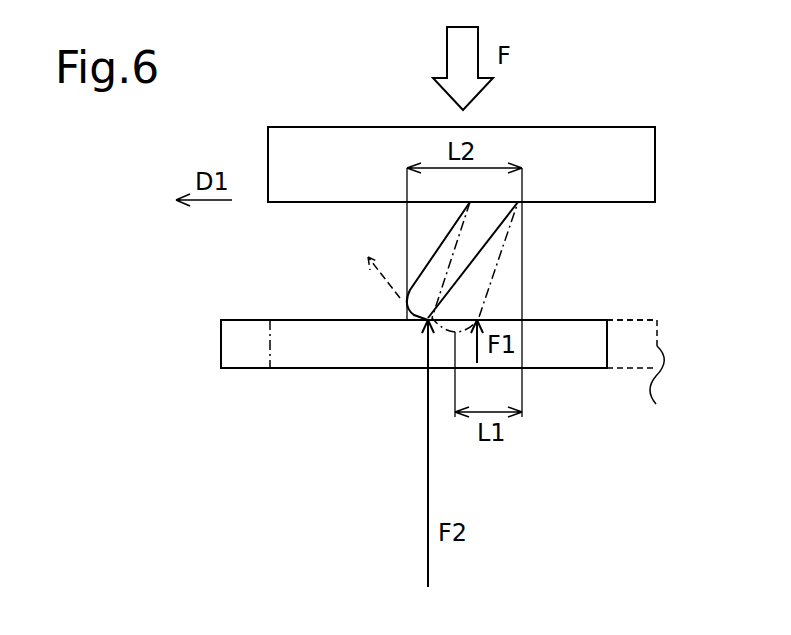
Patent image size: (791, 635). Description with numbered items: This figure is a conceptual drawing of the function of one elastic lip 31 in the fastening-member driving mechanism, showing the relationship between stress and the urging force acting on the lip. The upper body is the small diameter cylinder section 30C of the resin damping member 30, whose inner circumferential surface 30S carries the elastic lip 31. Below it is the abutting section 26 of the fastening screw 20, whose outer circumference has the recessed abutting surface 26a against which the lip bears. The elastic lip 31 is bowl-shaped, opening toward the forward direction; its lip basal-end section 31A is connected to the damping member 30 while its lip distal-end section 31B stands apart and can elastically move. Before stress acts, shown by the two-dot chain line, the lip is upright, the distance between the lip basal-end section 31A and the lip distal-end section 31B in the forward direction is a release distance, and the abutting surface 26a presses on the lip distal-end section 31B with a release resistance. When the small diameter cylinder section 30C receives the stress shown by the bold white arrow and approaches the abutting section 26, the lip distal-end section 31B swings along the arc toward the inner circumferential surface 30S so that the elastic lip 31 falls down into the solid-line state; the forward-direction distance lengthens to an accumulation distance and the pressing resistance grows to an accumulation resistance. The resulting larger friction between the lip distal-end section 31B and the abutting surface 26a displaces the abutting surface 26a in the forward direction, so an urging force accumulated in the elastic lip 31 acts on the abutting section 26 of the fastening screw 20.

The damping member 30 is at (658, 98).
The small diameter cylinder section 30C is at (656, 166).
The inner circumferential surface 30S is at (285, 203).
The elastic lip 31 is at (445, 254).
The lip basal-end section 31A is at (519, 216).
The lip distal-end section 31B is at (405, 297).
The abutting section 26 is at (610, 350).
The abutting surface 26a is at (630, 320).
The fastening screw 20 is at (617, 447).